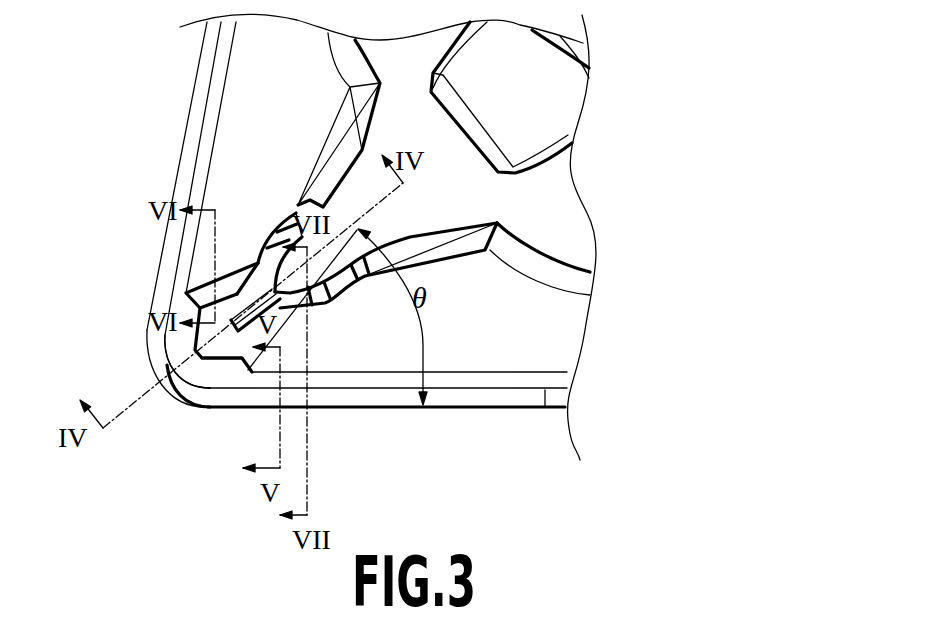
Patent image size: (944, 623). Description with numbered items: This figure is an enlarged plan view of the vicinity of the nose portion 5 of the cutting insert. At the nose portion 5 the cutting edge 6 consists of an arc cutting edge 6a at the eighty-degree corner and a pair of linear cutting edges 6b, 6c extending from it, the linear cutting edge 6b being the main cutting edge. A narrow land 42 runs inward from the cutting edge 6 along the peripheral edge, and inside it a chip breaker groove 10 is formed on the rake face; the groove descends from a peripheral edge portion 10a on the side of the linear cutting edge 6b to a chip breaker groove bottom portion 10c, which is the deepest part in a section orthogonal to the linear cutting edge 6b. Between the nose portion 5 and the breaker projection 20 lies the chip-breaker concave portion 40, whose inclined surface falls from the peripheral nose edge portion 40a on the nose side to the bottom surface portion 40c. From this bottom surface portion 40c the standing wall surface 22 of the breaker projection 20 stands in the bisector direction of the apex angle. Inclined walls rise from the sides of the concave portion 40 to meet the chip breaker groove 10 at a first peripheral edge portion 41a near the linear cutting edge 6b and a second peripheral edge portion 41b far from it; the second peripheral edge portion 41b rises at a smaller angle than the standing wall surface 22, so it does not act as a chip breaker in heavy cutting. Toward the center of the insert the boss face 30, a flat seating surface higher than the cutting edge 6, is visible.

The nose portion 5 is at (158, 392).
The cutting edge 6 is at (457, 407).
The arc cutting edge 6a is at (185, 408).
The linear cutting edge 6b is at (408, 407).
The linear cutting edge 6c is at (182, 140).
The chip breaker groove 10 is at (268, 125).
The peripheral edge portion 10a is at (545, 407).
The chip breaker groove bottom portion 10c is at (500, 323).
The breaker projection 20 is at (283, 265).
The standing wall surface 22 is at (308, 313).
The boss face 30 is at (463, 190).
The chip-breaker concave portion 40 is at (192, 352).
The peripheral nose edge portion 40a is at (173, 385).
The bottom surface portion 40c is at (221, 357).
The first peripheral edge portion 41a is at (285, 313).
The second peripheral edge portion 41b is at (207, 287).
The land 42 is at (498, 398).